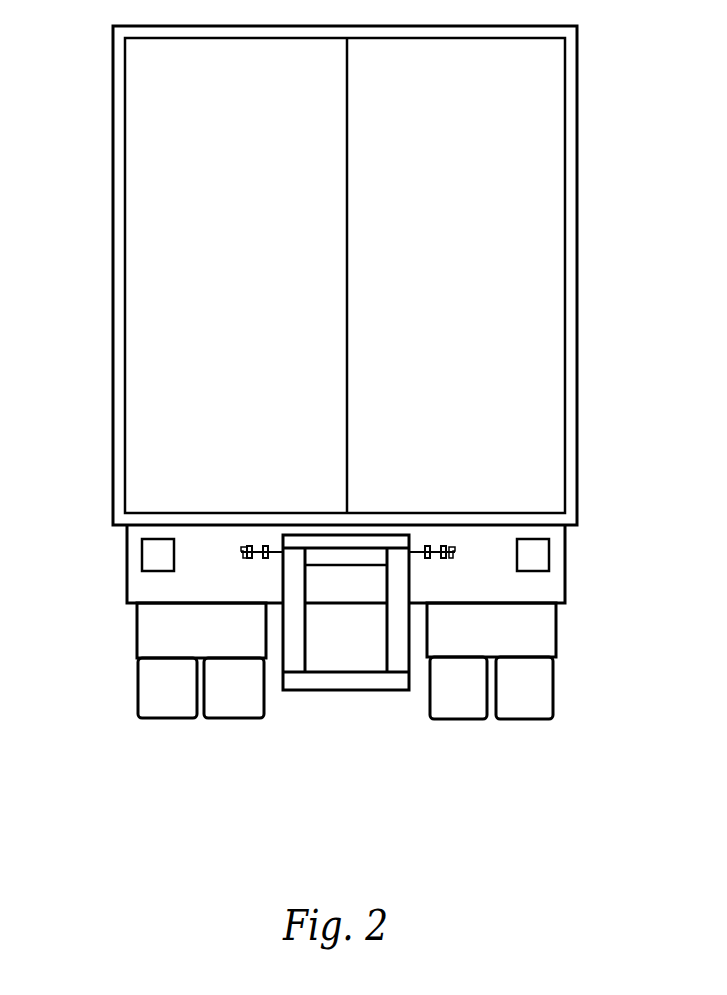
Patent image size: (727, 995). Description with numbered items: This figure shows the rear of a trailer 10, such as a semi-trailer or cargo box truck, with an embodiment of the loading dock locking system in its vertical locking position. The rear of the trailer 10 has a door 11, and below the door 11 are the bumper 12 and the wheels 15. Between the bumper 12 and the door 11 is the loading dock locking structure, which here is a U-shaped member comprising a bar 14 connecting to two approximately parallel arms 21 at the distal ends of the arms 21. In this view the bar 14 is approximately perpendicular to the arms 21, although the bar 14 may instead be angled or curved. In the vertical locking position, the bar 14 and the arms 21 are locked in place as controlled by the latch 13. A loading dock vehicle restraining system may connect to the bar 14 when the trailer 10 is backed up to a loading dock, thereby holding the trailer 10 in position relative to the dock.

The trailer 10 is at (113, 130).
The door 11 is at (517, 198).
The bumper 12 is at (566, 583).
The latch 13 is at (238, 548).
The bar 14 is at (338, 685).
The wheels 15 is at (139, 690).
The arms 21 is at (299, 645).